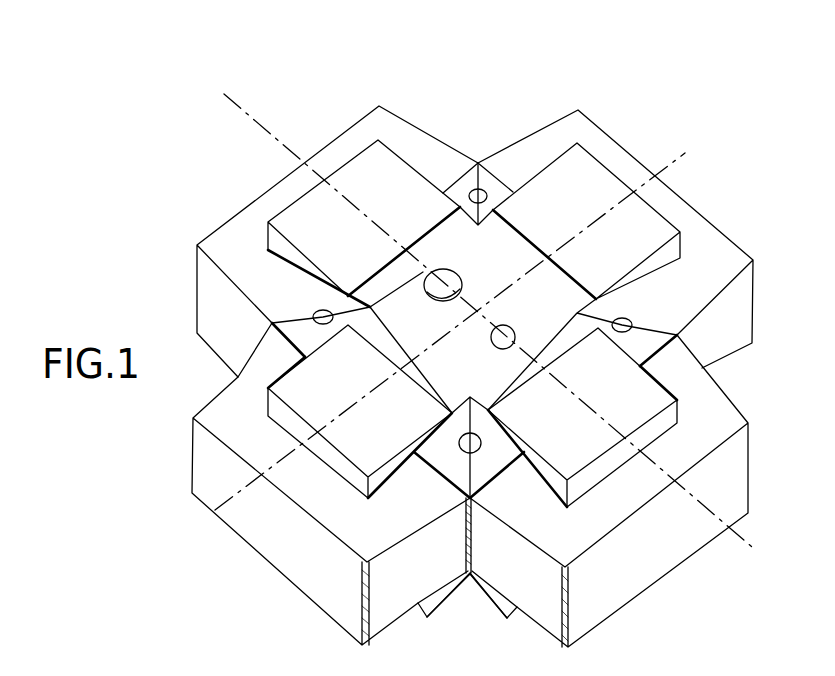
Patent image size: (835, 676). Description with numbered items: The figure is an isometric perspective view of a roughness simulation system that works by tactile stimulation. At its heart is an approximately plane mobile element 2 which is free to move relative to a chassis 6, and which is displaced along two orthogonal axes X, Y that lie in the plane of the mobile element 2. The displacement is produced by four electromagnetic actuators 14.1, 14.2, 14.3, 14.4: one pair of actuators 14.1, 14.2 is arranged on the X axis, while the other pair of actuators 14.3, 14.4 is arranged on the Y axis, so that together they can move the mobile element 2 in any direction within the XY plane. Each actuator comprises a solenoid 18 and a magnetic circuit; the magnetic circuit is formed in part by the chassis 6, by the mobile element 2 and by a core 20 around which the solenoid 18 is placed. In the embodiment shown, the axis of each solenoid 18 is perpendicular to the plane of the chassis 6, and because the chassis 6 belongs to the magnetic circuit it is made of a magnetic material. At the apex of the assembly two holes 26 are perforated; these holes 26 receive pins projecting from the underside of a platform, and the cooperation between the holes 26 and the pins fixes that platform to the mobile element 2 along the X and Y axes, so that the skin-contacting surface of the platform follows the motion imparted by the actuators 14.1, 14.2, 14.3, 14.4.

The mobile element 2 is at (433, 347).
The chassis 6 is at (443, 593).
The electromagnetic actuator 14.1 is at (333, 89).
The electromagnetic actuator 14.2 is at (674, 606).
The electromagnetic actuator 14.3 is at (650, 139).
The electromagnetic actuator 14.4 is at (151, 518).
The solenoid 18 is at (212, 298).
The core 20 is at (385, 163).
The hole 26 is at (443, 272).
The X axis X is at (235, 106).
The Y axis Y is at (678, 158).